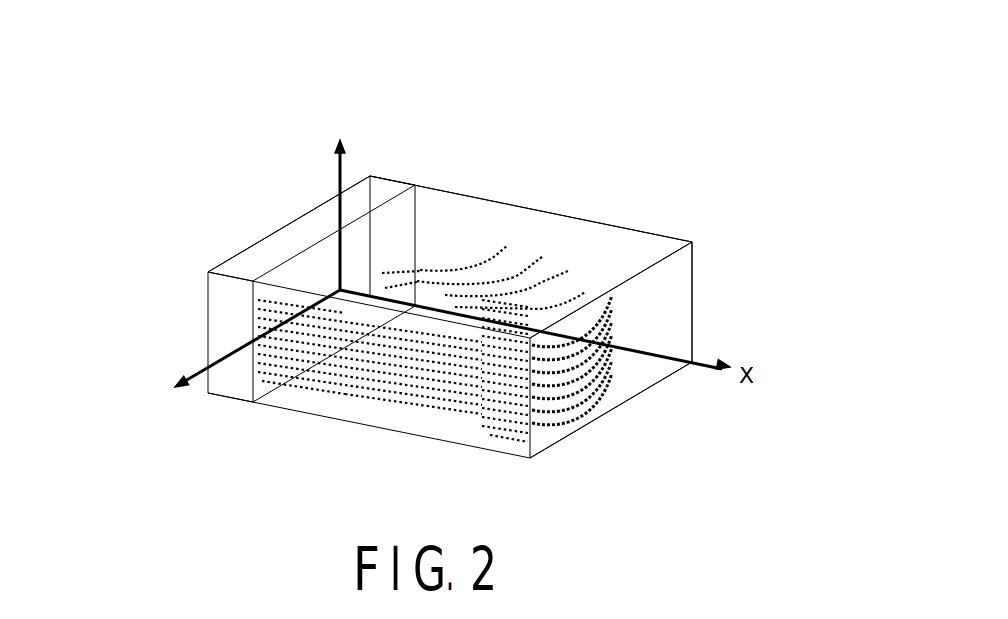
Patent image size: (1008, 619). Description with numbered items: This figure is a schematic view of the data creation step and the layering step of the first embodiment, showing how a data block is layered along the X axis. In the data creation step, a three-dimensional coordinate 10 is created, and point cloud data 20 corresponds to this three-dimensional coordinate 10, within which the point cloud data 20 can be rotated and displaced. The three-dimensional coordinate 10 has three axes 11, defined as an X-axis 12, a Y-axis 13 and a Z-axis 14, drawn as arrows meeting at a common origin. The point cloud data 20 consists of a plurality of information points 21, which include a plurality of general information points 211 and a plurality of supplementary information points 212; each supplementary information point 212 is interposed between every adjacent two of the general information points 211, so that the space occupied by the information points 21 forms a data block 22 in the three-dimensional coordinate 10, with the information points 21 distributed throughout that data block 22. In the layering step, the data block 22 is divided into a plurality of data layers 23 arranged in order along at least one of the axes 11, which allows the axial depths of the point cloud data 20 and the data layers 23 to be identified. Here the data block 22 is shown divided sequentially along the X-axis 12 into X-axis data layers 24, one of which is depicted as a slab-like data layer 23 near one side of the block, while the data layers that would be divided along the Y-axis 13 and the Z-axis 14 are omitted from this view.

The three-dimensional coordinate 10 is at (716, 357).
The axes 11 is at (700, 362).
The X-axis 12 is at (700, 363).
The Y-axis 13 is at (197, 372).
The Z-axis 14 is at (342, 162).
The point cloud data 20 is at (513, 222).
The information points 21 is at (543, 257).
The data block 22 is at (657, 232).
The data layers 23 is at (237, 278).
The X-axis data layers 24 is at (295, 237).
The general information points 211 is at (400, 267).
The supplementary information points 212 is at (407, 268).